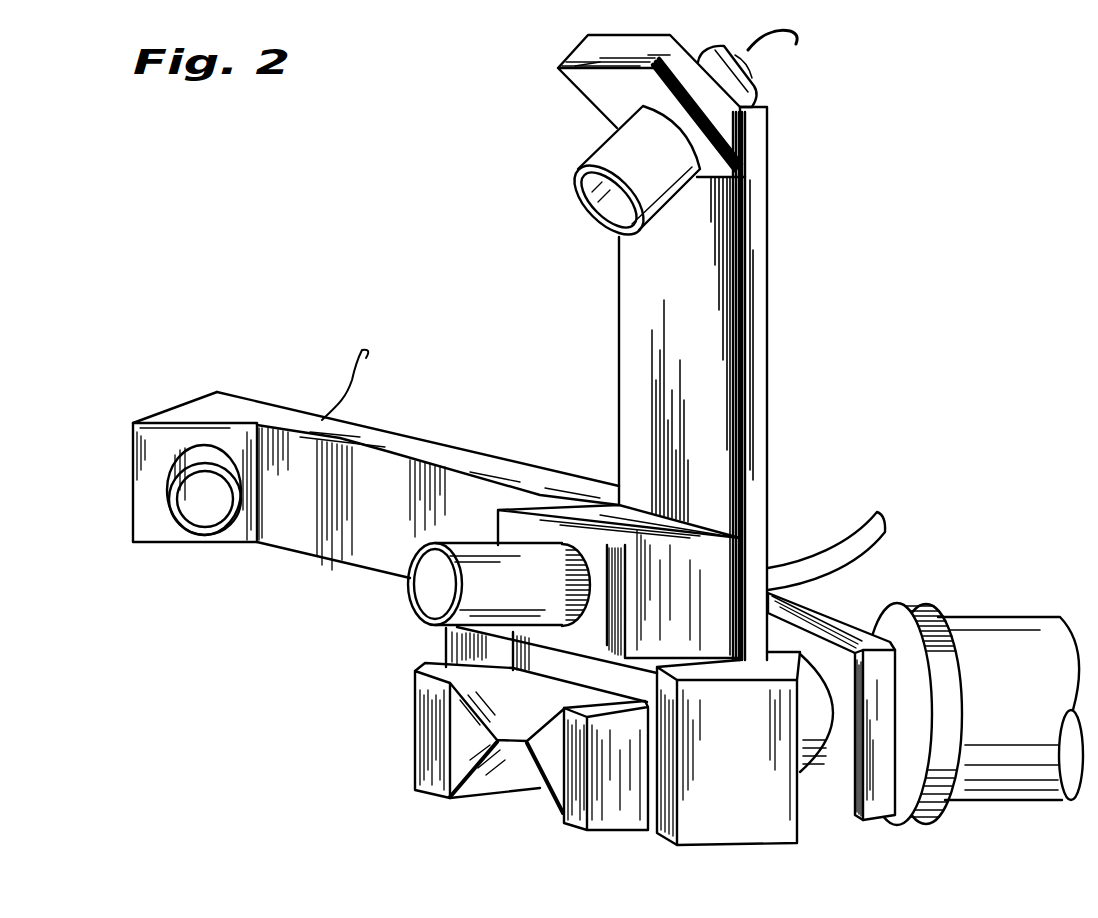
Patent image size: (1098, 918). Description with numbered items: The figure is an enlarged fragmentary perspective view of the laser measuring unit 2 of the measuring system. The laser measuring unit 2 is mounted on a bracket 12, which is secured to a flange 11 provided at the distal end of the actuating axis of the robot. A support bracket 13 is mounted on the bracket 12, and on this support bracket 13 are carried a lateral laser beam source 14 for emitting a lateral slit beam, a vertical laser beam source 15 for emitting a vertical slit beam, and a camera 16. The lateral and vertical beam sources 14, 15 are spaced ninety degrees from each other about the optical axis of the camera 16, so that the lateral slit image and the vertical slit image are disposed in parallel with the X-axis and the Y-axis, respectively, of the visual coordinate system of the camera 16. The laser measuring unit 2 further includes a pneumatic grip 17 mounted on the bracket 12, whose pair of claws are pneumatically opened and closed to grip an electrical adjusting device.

The laser measuring unit 2 is at (808, 427).
The flange 11 is at (923, 620).
The bracket 12 is at (810, 612).
The support bracket 13 is at (637, 417).
The lateral laser beam source 14 is at (623, 158).
The vertical laser beam source 15 is at (175, 522).
The camera 16 is at (477, 603).
The pneumatic grip 17 is at (553, 800).